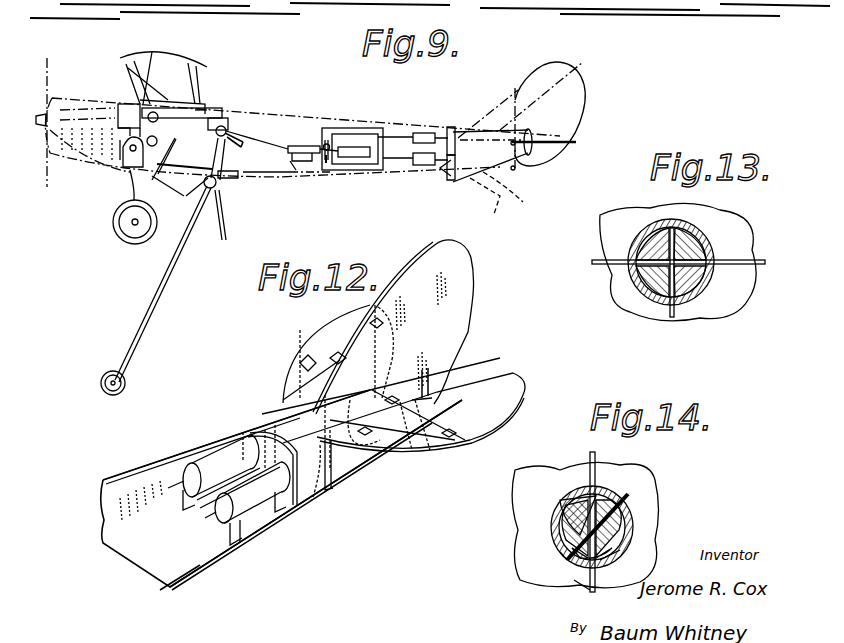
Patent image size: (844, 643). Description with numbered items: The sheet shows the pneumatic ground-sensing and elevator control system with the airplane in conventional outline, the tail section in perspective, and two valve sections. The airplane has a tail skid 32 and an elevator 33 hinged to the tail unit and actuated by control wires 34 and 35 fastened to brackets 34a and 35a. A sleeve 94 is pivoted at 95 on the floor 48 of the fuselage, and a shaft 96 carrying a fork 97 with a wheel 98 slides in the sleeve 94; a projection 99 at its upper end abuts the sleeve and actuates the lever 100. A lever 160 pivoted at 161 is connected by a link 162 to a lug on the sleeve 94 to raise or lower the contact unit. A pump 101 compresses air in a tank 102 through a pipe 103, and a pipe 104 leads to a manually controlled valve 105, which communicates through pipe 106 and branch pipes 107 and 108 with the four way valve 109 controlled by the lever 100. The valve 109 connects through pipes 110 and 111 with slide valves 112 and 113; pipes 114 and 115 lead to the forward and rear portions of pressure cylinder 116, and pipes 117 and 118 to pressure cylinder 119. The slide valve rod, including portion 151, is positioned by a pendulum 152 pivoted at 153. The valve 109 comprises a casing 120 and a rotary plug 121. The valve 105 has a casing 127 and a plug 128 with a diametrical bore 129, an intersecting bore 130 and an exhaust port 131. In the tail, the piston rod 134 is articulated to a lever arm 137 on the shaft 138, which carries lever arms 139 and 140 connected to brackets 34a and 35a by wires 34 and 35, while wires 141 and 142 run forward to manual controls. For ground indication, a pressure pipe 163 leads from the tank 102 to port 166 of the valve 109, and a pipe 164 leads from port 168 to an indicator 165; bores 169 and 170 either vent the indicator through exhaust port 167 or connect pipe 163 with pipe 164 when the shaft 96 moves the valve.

In FIG. 9, the tail skid 32 is at (494, 214).
In FIG. 9, the elevator 33 is at (572, 146).
In FIG. 12, the elevator 33 is at (318, 334).
In FIG. 9, the control wire 34 is at (528, 128).
In FIG. 12, the control wire 34 is at (296, 388).
In FIG. 12, the bracket 34a is at (440, 376).
In FIG. 9, the control wire 35 is at (520, 154).
In FIG. 12, the control wire 35 is at (383, 445).
In FIG. 12, the bracket 35a is at (428, 450).
In FIG. 9, the floor 48 is at (298, 176).
In FIG. 9, the sleeve 94 is at (218, 190).
In FIG. 9, the pivot 95 is at (216, 223).
In FIG. 9, the shaft 96 is at (166, 284).
In FIG. 9, the fork 97 is at (110, 372).
In FIG. 9, the wheel 98 is at (124, 374).
In FIG. 9, the projection 99 is at (236, 143).
In FIG. 9, the lever 100 is at (246, 134).
In FIG. 9, the pump 101 is at (124, 156).
In FIG. 9, the tank 102 is at (125, 108).
In FIG. 9, the pipe 103 is at (120, 142).
In FIG. 9, the pipe 104 is at (160, 48).
In FIG. 13, the pipe 104 is at (606, 259).
In FIG. 9, the manually controlled valve 105 is at (156, 113).
In FIG. 13, the manually controlled valve 105 is at (628, 300).
In FIG. 9, the pipe 106 is at (205, 103).
In FIG. 13, the pipe 106 is at (760, 258).
In FIG. 9, the branch pipe 107 is at (205, 126).
In FIG. 9, the branch pipe 108 is at (224, 118).
In FIG. 9, the four way valve 109 is at (226, 128).
In FIG. 9, the pipe 110 is at (296, 144).
In FIG. 9, the pipe 111 is at (246, 179).
In FIG. 9, the slide valve 112 is at (286, 175).
In FIG. 9, the slide valve 113 is at (360, 158).
In FIG. 9, the pipe 114 is at (408, 134).
In FIG. 12, the pipe 114 is at (185, 456).
In FIG. 9, the pipe 115 is at (322, 172).
In FIG. 12, the pipe 115 is at (186, 512).
In FIG. 9, the pressure cylinder 116 is at (450, 127).
In FIG. 12, the pressure cylinder 116 is at (216, 455).
In FIG. 9, the pipe 117 is at (418, 168).
In FIG. 12, the pipe 117 is at (210, 524).
In FIG. 9, the pipe 118 is at (356, 134).
In FIG. 12, the pipe 118 is at (262, 535).
In FIG. 9, the pressure cylinder 119 is at (455, 181).
In FIG. 12, the pressure cylinder 119 is at (200, 562).
In FIG. 14, the casing 120 is at (636, 532).
In FIG. 14, the rotary plug 121 is at (556, 510).
In FIG. 13, the casing 127 is at (700, 234).
In FIG. 13, the plug 128 is at (702, 294).
In FIG. 13, the diametrical bore 129 is at (660, 300).
In FIG. 13, the intersecting bore 130 is at (657, 228).
In FIG. 13, the exhaust port 131 is at (688, 322).
In FIG. 12, the piston rod 134 is at (244, 432).
In FIG. 12, the lever arm 137 is at (283, 367).
In FIG. 12, the shaft 138 is at (319, 366).
In FIG. 12, the lever arm 139 is at (336, 456).
In FIG. 12, the lever arm 140 is at (334, 482).
In FIG. 12, the wire 141 is at (262, 425).
In FIG. 12, the wire 142 is at (297, 510).
In FIG. 9, the valve rod portion 151 is at (334, 128).
In FIG. 9, the pendulum 152 is at (330, 164).
In FIG. 9, the pivot 153 is at (322, 140).
In FIG. 9, the lever 160 is at (188, 180).
In FIG. 9, the pivot 161 is at (124, 188).
In FIG. 9, the link 162 is at (190, 200).
In FIG. 9, the pressure pipe 163 is at (234, 82).
In FIG. 14, the pressure pipe 163 is at (598, 464).
In FIG. 9, the pipe 164 is at (212, 162).
In FIG. 14, the pipe 164 is at (584, 590).
In FIG. 9, the indicator 165 is at (138, 120).
In FIG. 14, the port 166 is at (584, 485).
In FIG. 14, the exhaust port 167 is at (630, 496).
In FIG. 14, the port 168 is at (582, 570).
In FIG. 14, the bore 169 is at (556, 540).
In FIG. 14, the bore 170 is at (640, 575).